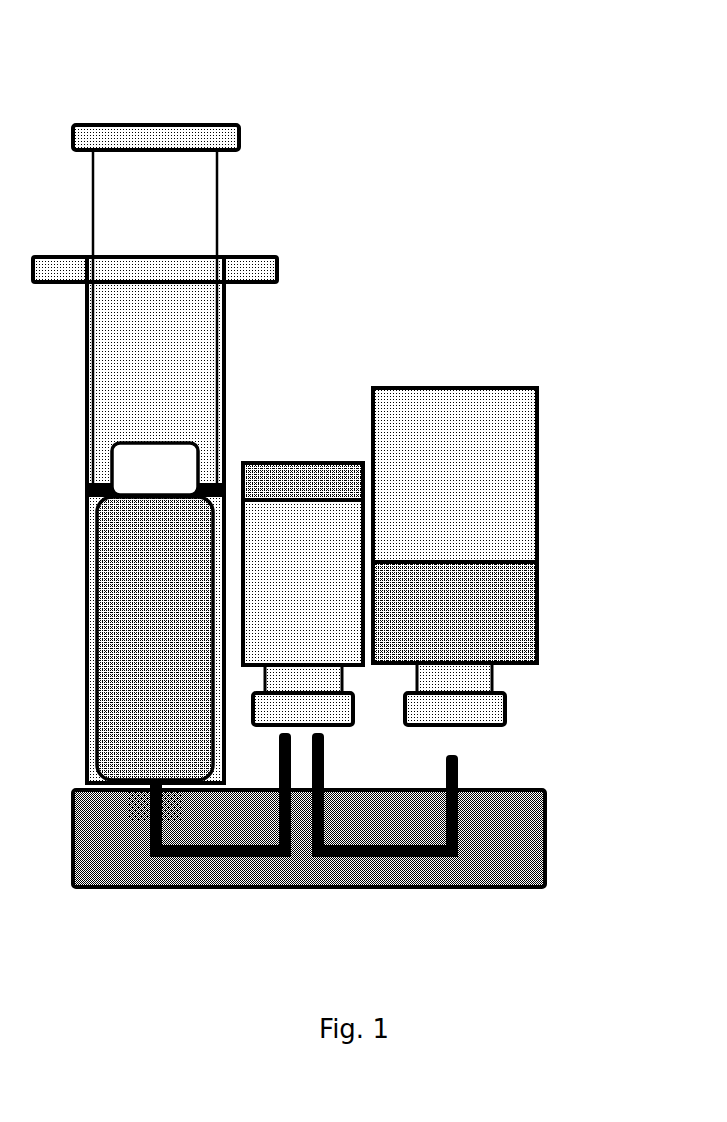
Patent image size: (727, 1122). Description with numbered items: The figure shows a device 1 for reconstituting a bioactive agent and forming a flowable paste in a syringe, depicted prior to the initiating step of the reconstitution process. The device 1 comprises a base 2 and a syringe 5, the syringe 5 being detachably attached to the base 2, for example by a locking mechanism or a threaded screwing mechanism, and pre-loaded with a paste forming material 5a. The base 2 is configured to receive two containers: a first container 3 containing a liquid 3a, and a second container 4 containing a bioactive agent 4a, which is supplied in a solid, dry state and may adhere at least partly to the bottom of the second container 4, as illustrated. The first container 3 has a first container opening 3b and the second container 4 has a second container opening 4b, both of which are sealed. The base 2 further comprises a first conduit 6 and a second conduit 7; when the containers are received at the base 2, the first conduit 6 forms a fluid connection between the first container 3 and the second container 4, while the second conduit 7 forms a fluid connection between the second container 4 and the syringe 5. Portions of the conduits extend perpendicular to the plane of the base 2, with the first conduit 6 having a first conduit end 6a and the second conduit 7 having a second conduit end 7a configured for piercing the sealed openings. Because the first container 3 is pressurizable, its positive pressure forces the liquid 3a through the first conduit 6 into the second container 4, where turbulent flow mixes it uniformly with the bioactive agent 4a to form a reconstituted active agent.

The device 1 is at (345, 484).
The base 2 is at (552, 840).
The first container 3 is at (515, 500).
The first container liquid 3a is at (455, 612).
The first container opening 3b is at (510, 710).
The second container 4 is at (326, 525).
The second container bioactive agent 4a is at (277, 492).
The second container opening 4b is at (356, 713).
The syringe 5 is at (155, 416).
The syringe paste forming material 5a is at (155, 638).
The first conduit 6 is at (460, 835).
The first conduit end 6a is at (465, 763).
The second conduit 7 is at (223, 844).
The second conduit end 7a is at (275, 745).